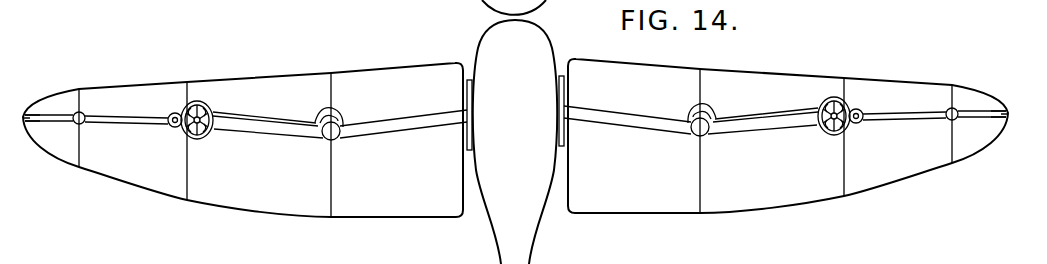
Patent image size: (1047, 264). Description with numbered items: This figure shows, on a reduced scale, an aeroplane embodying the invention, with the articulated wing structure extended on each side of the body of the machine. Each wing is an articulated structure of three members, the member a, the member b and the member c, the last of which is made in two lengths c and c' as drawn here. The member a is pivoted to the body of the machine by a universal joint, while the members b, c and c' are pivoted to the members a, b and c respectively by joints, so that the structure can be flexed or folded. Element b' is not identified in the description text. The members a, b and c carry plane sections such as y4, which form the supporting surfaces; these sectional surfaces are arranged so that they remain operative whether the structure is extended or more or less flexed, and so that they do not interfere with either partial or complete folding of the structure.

The first member a is at (663, 128).
The second member b is at (515, 150).
The rod upper member b' is at (515, 100).
The third member c is at (515, 138).
The outer length of third member c' is at (519, 139).
The plane section y4 is at (929, 163).